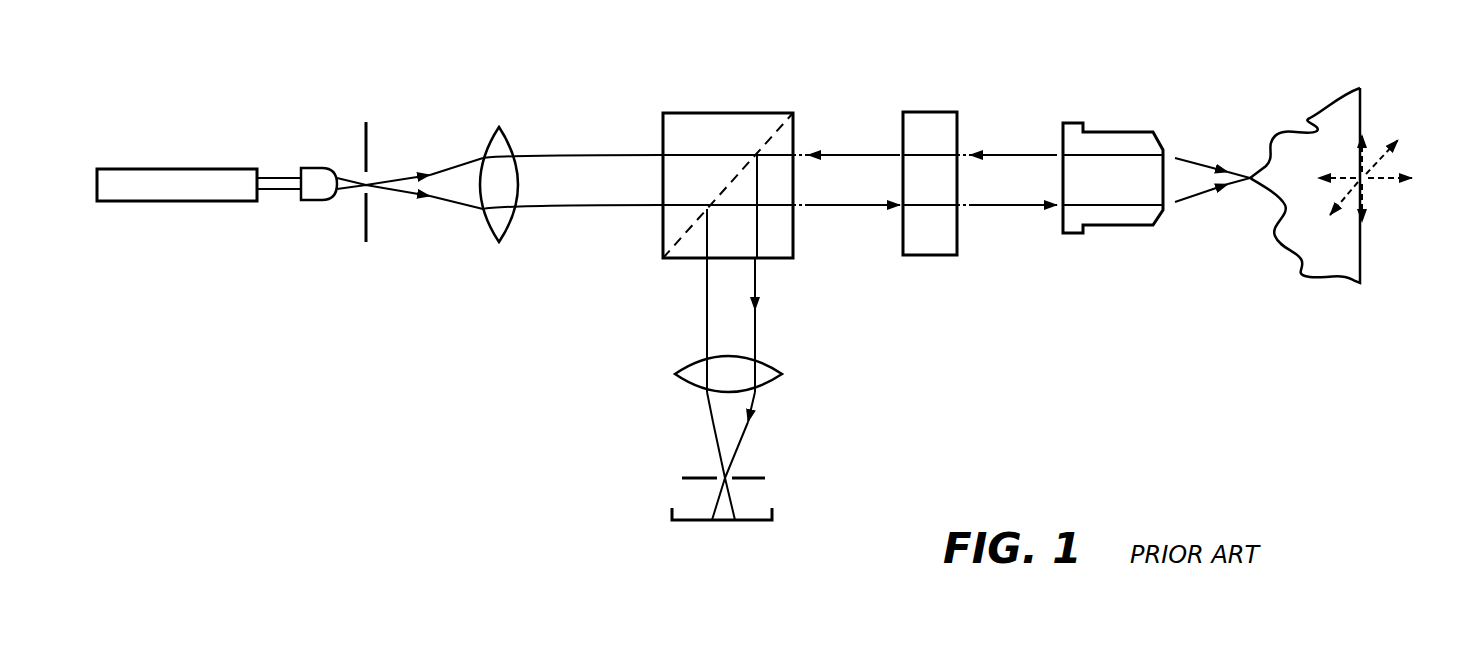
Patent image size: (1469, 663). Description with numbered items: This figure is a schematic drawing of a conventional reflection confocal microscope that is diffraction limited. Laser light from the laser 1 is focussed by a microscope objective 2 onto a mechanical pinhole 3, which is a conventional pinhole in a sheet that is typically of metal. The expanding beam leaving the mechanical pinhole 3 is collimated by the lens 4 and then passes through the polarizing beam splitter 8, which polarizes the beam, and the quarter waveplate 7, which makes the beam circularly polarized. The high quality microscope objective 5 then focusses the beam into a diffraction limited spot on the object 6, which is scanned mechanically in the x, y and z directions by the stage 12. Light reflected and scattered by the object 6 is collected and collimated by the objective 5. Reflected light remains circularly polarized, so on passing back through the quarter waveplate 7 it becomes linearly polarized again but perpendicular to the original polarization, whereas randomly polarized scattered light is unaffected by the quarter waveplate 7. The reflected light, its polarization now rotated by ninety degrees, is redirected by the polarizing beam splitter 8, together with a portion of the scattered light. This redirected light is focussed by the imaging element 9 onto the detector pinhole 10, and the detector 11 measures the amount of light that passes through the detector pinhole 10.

The laser 1 is at (145, 168).
The microscope objective 2 is at (300, 168).
The mechanical pinhole 3 is at (372, 165).
The lens 4 is at (508, 130).
The high quality microscope objective 5 is at (1100, 130).
The object 6 is at (1287, 160).
The quarter waveplate 7 is at (927, 120).
The polarizing beam splitter 8 is at (722, 113).
The imaging element 9 is at (782, 384).
The detector pinhole 10 is at (738, 470).
The detector 11 is at (683, 528).
The stage 12 is at (1375, 200).